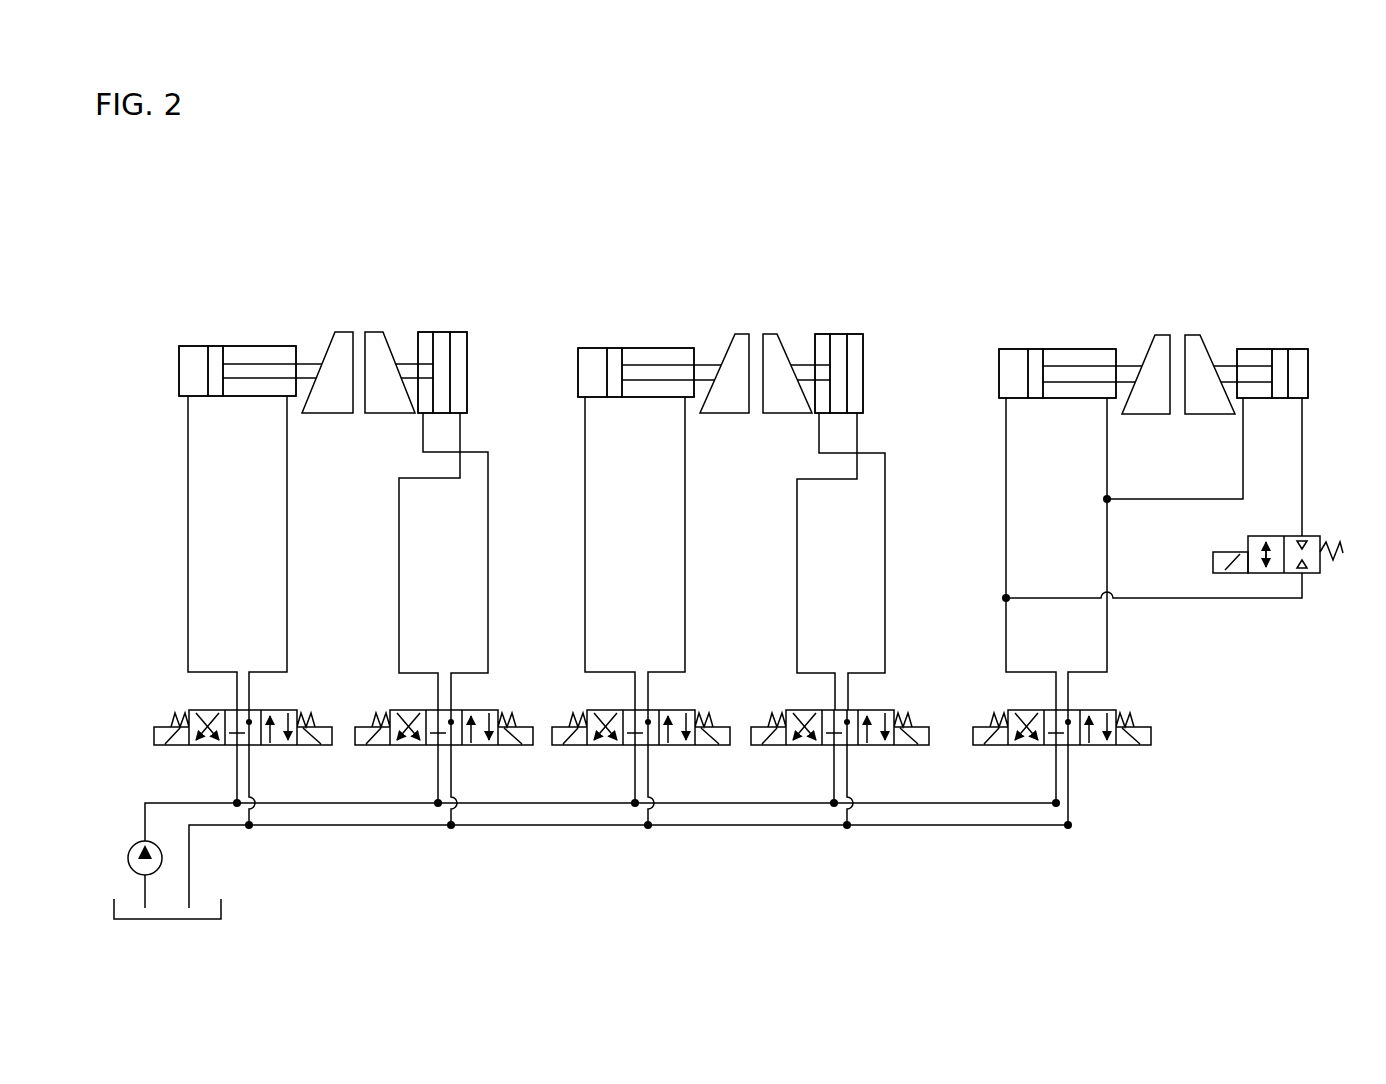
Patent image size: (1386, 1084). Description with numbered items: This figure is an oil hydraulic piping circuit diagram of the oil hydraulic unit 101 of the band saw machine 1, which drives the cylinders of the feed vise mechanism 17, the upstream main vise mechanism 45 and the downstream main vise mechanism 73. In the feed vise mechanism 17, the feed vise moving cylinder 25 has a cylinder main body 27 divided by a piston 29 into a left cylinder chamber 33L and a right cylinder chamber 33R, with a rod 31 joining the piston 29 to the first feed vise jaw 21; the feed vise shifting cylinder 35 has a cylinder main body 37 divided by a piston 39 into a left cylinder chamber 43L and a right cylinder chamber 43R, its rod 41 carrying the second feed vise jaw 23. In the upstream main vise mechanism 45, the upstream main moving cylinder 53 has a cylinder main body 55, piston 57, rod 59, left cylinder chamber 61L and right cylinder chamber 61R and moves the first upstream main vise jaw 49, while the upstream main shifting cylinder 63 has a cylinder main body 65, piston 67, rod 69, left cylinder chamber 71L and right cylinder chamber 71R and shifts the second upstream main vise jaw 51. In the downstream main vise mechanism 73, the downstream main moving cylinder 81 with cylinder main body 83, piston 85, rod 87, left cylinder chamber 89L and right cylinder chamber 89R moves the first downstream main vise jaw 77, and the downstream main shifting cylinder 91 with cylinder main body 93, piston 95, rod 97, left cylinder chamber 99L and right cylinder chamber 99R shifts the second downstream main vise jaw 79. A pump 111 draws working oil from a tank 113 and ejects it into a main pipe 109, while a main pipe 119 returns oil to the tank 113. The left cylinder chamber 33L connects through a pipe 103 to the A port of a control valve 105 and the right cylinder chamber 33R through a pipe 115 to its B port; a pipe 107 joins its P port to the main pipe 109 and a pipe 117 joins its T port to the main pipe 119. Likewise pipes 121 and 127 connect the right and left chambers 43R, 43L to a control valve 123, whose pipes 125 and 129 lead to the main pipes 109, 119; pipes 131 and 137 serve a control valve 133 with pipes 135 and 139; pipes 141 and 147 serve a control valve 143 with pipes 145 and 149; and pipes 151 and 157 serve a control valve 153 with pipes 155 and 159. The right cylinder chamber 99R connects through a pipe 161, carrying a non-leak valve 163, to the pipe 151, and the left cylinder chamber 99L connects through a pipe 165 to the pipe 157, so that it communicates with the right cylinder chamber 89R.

The band saw machine 1 is at (910, 150).
The feed vise mechanism 17 is at (367, 252).
The first feed vise jaw 21 is at (344, 332).
The second feed vise jaw 23 is at (378, 332).
The feed vise moving cylinder 25 is at (173, 362).
The cylinder main body 27 is at (179, 387).
The piston 29 is at (216, 346).
The rod 31 is at (306, 364).
The left cylinder chamber 33L is at (190, 346).
The right cylinder chamber 33R is at (265, 346).
The feed vise shifting cylinder 35 is at (473, 352).
The cylinder main body 37 is at (467, 405).
The piston 39 is at (442, 332).
The rod 41 is at (417, 375).
The left cylinder chamber 43L is at (428, 332).
The right cylinder chamber 43R is at (460, 332).
The upstream main vise mechanism 45 is at (762, 252).
The first upstream main vise jaw 49 is at (741, 334).
The second upstream main vise jaw 51 is at (773, 334).
The upstream main moving cylinder 53 is at (578, 368).
The cylinder main body 55 is at (578, 390).
The piston 57 is at (614, 348).
The rod 59 is at (703, 365).
The left cylinder chamber 61L is at (588, 348).
The right cylinder chamber 61R is at (663, 348).
The upstream main shifting cylinder 63 is at (870, 352).
The cylinder main body 65 is at (863, 405).
The piston 67 is at (837, 334).
The rod 69 is at (812, 376).
The left cylinder chamber 71L is at (823, 334).
The right cylinder chamber 71R is at (858, 334).
The downstream main vise mechanism 73 is at (1186, 252).
The first downstream main vise jaw 77 is at (1160, 335).
The second downstream main vise jaw 79 is at (1198, 335).
The downstream main moving cylinder 81 is at (998, 368).
The cylinder main body 83 is at (998, 390).
The piston 85 is at (1035, 349).
The rod 87 is at (1124, 366).
The left cylinder chamber 89L is at (1008, 349).
The right cylinder chamber 89R is at (1083, 349).
The downstream main shifting cylinder 91 is at (1312, 355).
The cylinder main body 93 is at (1309, 392).
The piston 95 is at (1280, 349).
The rod 97 is at (1232, 377).
The left cylinder chamber 99L is at (1248, 349).
The right cylinder chamber 99R is at (1305, 349).
The oil hydraulic unit 101 is at (1190, 746).
The pipe 103 is at (188, 507).
The control valve 105 is at (197, 710).
The pipe 107 is at (237, 777).
The main pipe 109 is at (146, 840).
The pump 111 is at (128, 858).
The tank 113 is at (221, 912).
The pipe 115 is at (287, 500).
The pipe 117 is at (252, 792).
The main pipe 119 is at (189, 862).
The pipe 121 is at (399, 572).
The control valve 123 is at (396, 710).
The pipe 125 is at (438, 777).
The pipe 127 is at (488, 634).
The pipe 129 is at (453, 792).
The pipe 131 is at (585, 507).
The control valve 133 is at (593, 710).
The pipe 135 is at (635, 777).
The pipe 137 is at (685, 500).
The pipe 139 is at (650, 792).
The pipe 141 is at (797, 572).
The control valve 143 is at (792, 710).
The pipe 145 is at (834, 777).
The pipe 147 is at (885, 634).
The pipe 149 is at (849, 792).
The pipe 151 is at (1006, 507).
The control valve 153 is at (1014, 710).
The pipe 155 is at (1056, 777).
The pipe 157 is at (1107, 445).
The pipe 159 is at (1070, 792).
The pipe 161 is at (1302, 481).
The non-leak valve 163 is at (1310, 573).
The pipe 165 is at (1243, 478).